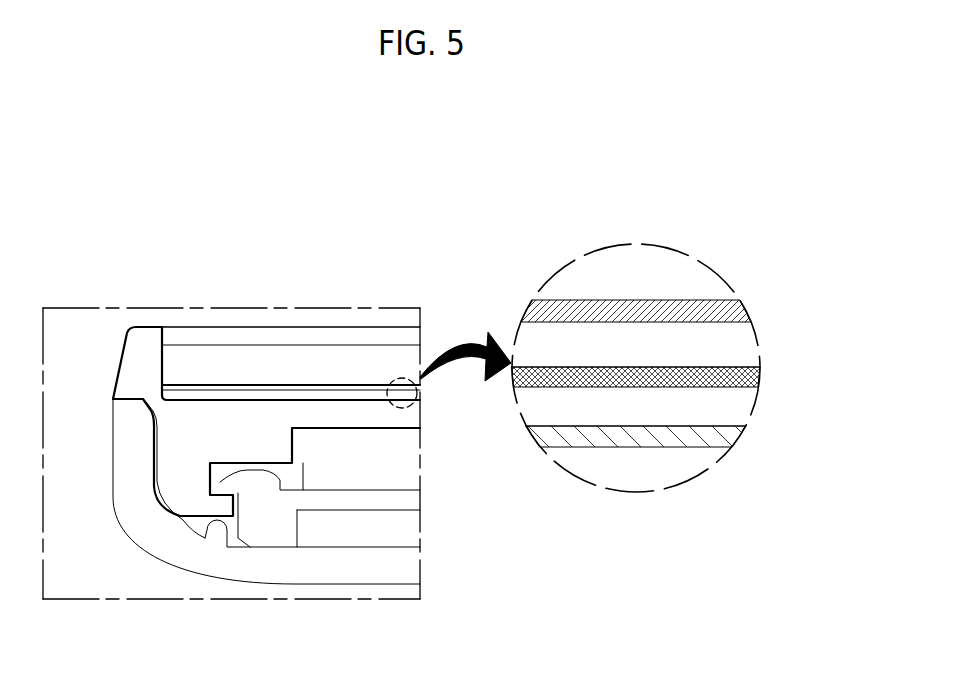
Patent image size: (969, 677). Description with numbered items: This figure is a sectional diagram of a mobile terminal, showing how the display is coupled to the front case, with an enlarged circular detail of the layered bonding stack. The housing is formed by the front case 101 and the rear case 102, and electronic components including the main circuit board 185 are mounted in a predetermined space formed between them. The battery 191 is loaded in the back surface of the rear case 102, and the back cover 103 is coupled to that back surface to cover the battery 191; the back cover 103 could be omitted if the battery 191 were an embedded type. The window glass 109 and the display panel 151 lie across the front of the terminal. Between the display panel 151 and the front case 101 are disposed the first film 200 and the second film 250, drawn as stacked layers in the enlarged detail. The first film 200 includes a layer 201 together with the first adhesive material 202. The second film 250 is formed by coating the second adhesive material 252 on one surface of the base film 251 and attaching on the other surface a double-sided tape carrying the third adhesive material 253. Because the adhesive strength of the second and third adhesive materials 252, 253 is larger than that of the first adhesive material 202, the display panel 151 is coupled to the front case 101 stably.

The front case 101 is at (128, 353).
The rear case 102 is at (410, 502).
The back cover 103 is at (123, 448).
The window glass 109 is at (262, 333).
The display panel 151 is at (375, 357).
The main circuit board 185 is at (410, 476).
The battery 191 is at (410, 528).
The first film 200 is at (812, 285).
The display panel 201 is at (747, 352).
The first adhesive material 202 is at (742, 310).
The second film 250 is at (812, 385).
The base film 251 is at (745, 410).
The second adhesive material 252 is at (748, 380).
The third adhesive material 253 is at (730, 437).